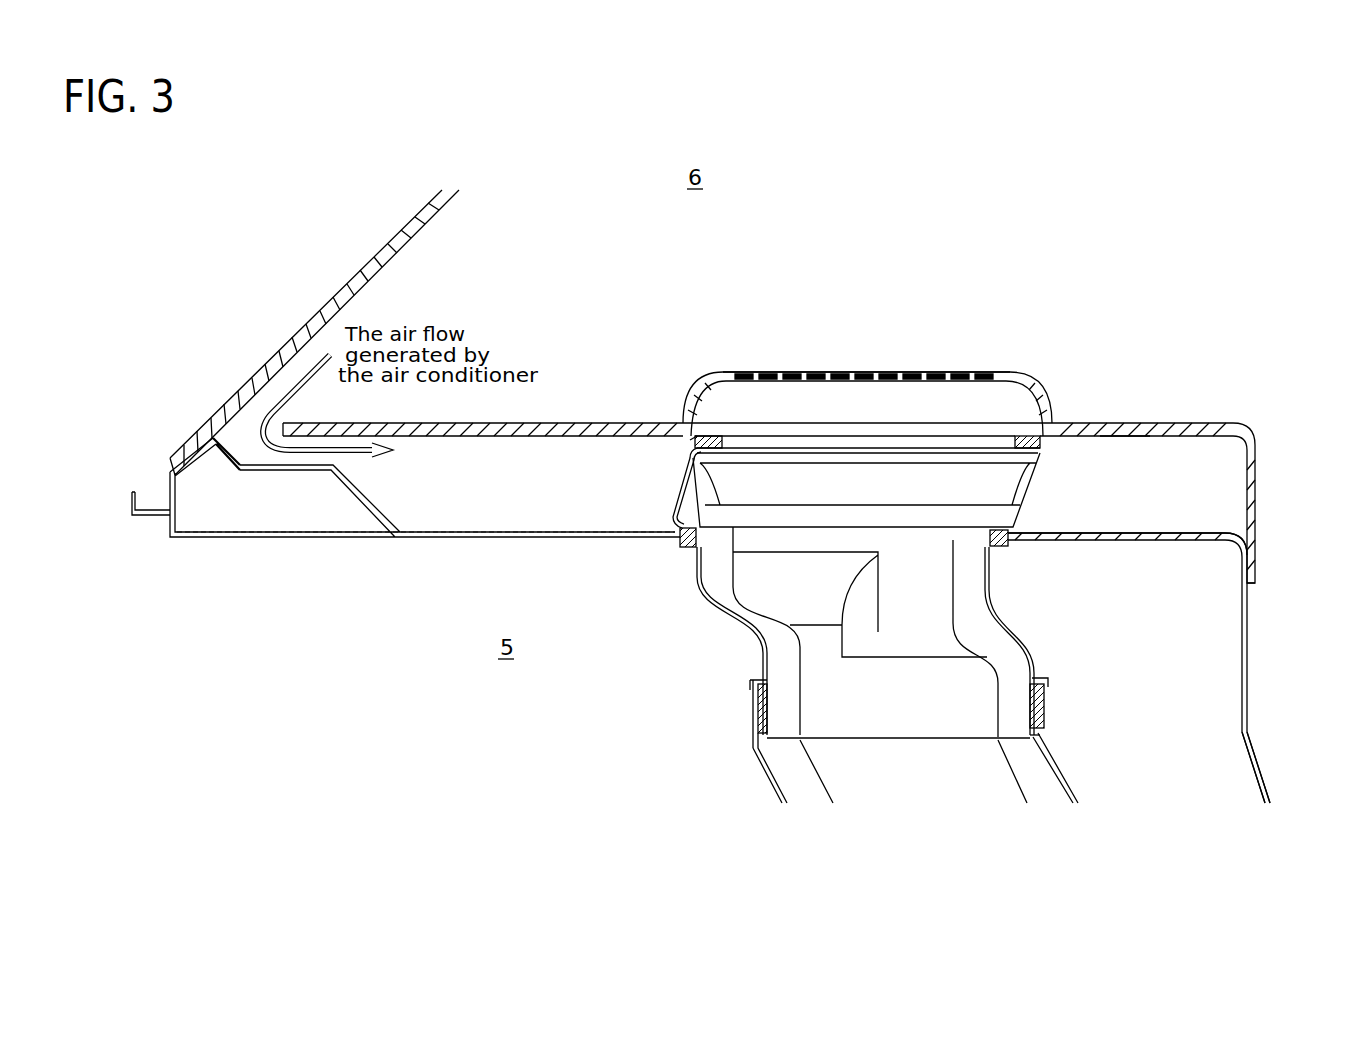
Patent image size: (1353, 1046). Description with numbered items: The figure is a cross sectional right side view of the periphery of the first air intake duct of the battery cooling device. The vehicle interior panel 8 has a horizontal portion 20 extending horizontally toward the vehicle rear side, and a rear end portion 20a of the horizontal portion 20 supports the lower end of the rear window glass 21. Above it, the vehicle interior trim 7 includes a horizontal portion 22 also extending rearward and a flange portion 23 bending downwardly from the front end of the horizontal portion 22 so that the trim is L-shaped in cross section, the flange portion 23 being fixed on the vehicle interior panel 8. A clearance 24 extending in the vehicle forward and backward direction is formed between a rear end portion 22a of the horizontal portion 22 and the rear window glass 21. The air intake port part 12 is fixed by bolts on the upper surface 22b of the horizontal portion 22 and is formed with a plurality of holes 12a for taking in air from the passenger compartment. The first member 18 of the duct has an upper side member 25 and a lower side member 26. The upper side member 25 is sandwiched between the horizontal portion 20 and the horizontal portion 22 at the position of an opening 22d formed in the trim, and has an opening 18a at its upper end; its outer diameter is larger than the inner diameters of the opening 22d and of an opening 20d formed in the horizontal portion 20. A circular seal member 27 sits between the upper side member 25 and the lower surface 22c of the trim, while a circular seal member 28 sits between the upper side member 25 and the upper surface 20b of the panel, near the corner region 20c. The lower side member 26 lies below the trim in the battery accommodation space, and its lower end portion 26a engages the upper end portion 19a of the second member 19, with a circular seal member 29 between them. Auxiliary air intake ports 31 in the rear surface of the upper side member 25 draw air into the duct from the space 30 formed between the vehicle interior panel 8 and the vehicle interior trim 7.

The vehicle interior trim 7 is at (1216, 419).
The vehicle interior panel 8 is at (1262, 756).
The air intake port part 12 is at (1014, 365).
The holes 12a is at (803, 376).
The first member 18 is at (714, 609).
The opening 18a is at (1008, 444).
The second member 19 is at (758, 781).
The upper end portion 19a is at (749, 681).
The horizontal portion 20 is at (1211, 530).
The rear end portion 20a is at (170, 472).
The upper surface 20b is at (1073, 533).
The trim corner 20c is at (1088, 541).
The opening 20d is at (988, 551).
The rear window glass 21 is at (318, 302).
The horizontal portion 22 is at (576, 418).
The rear end portion 22a is at (280, 425).
The upper surface 22b is at (1097, 422).
The lower surface 22c is at (1115, 439).
The opening 22d is at (733, 427).
The flange portion 23 is at (1256, 543).
The clearance 24 is at (243, 435).
The upper side member 25 is at (1030, 501).
The lower side member 26 is at (1010, 629).
The lower end portion 26a is at (1040, 729).
The circular seal member 27 is at (695, 439).
The circular seal member 28 is at (682, 547).
The circular seal member 29 is at (1044, 713).
The space 30 is at (530, 500).
The auxiliary air intake ports 31 is at (665, 484).